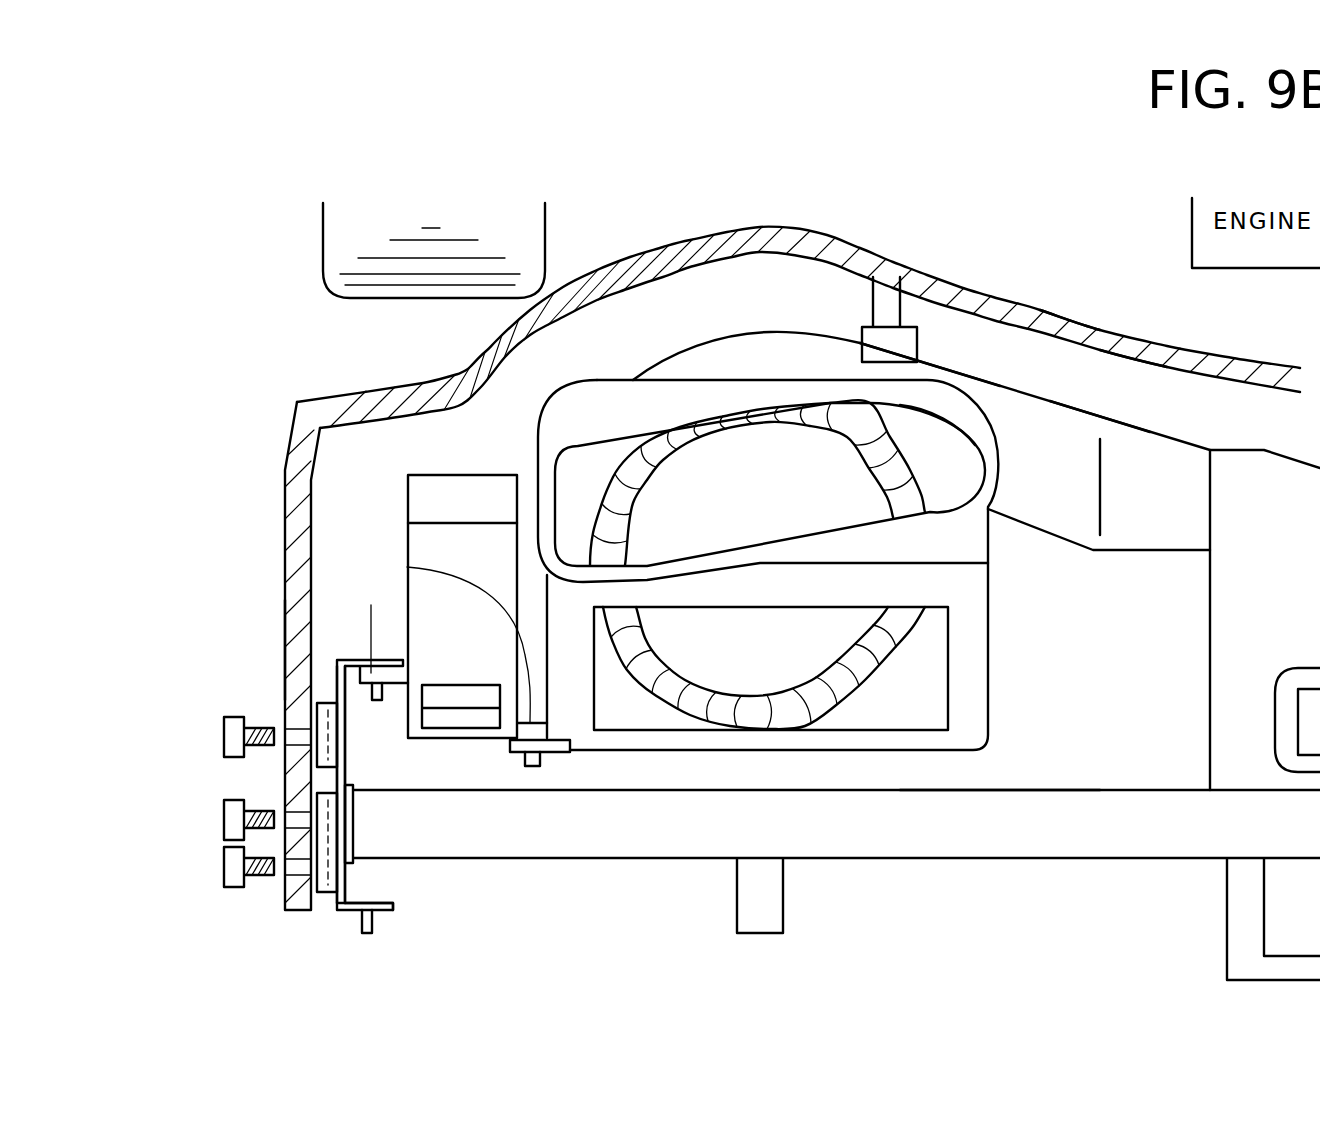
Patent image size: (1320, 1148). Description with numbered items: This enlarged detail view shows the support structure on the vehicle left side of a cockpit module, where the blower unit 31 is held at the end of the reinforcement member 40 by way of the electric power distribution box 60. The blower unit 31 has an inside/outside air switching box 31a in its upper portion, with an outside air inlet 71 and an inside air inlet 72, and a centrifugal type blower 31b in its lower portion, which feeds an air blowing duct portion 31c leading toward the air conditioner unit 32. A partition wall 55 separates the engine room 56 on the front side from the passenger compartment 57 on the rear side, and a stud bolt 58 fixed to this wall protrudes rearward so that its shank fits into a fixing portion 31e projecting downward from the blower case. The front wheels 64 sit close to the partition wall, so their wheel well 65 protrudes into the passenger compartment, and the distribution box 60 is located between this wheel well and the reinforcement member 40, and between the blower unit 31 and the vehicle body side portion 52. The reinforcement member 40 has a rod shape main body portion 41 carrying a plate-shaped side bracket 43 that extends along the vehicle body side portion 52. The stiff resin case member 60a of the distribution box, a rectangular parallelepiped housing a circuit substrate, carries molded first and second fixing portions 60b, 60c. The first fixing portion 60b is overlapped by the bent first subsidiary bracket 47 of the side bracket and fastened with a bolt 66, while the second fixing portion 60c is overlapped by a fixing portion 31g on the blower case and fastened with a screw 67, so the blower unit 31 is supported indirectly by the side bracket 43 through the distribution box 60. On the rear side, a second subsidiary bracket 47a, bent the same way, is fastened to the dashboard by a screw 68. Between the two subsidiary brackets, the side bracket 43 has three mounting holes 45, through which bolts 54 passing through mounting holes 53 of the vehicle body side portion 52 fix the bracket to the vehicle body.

The blower unit 31 is at (715, 330).
The inside/outside air switching box 31a is at (673, 398).
The centrifugal type blower 31b is at (627, 467).
The air blowing duct portion 31c is at (1073, 502).
The fixing portion 31e is at (917, 350).
The fixing portion 31g is at (540, 745).
The air conditioner unit 32 is at (1236, 438).
The reinforcement member 40 is at (1047, 868).
The main body portion 41 is at (1010, 840).
The side bracket 43 is at (337, 673).
The mounting holes 45 is at (328, 893).
The first subsidiary bracket 47 is at (357, 670).
The second subsidiary bracket 47a is at (393, 907).
The vehicle body side portion 52 is at (283, 652).
The mounting holes 53 is at (297, 868).
The bolts 54 is at (224, 867).
The partition wall 55 is at (1073, 326).
The engine room 56 is at (1113, 310).
The passenger compartment 57 is at (1120, 390).
The stud bolt 58 is at (897, 310).
The electric power distribution box 60 is at (392, 544).
The resin case member 60a is at (447, 542).
The first fixing portion 60b is at (371, 610).
The second fixing portion 60c is at (407, 567).
The front wheels 64 is at (323, 250).
The wheel well 65 is at (463, 363).
The bolt 66 is at (380, 700).
The screw 67 is at (534, 766).
The screw 68 is at (372, 925).
The outside air inlet 71 is at (927, 417).
The inside air inlet 72 is at (948, 676).